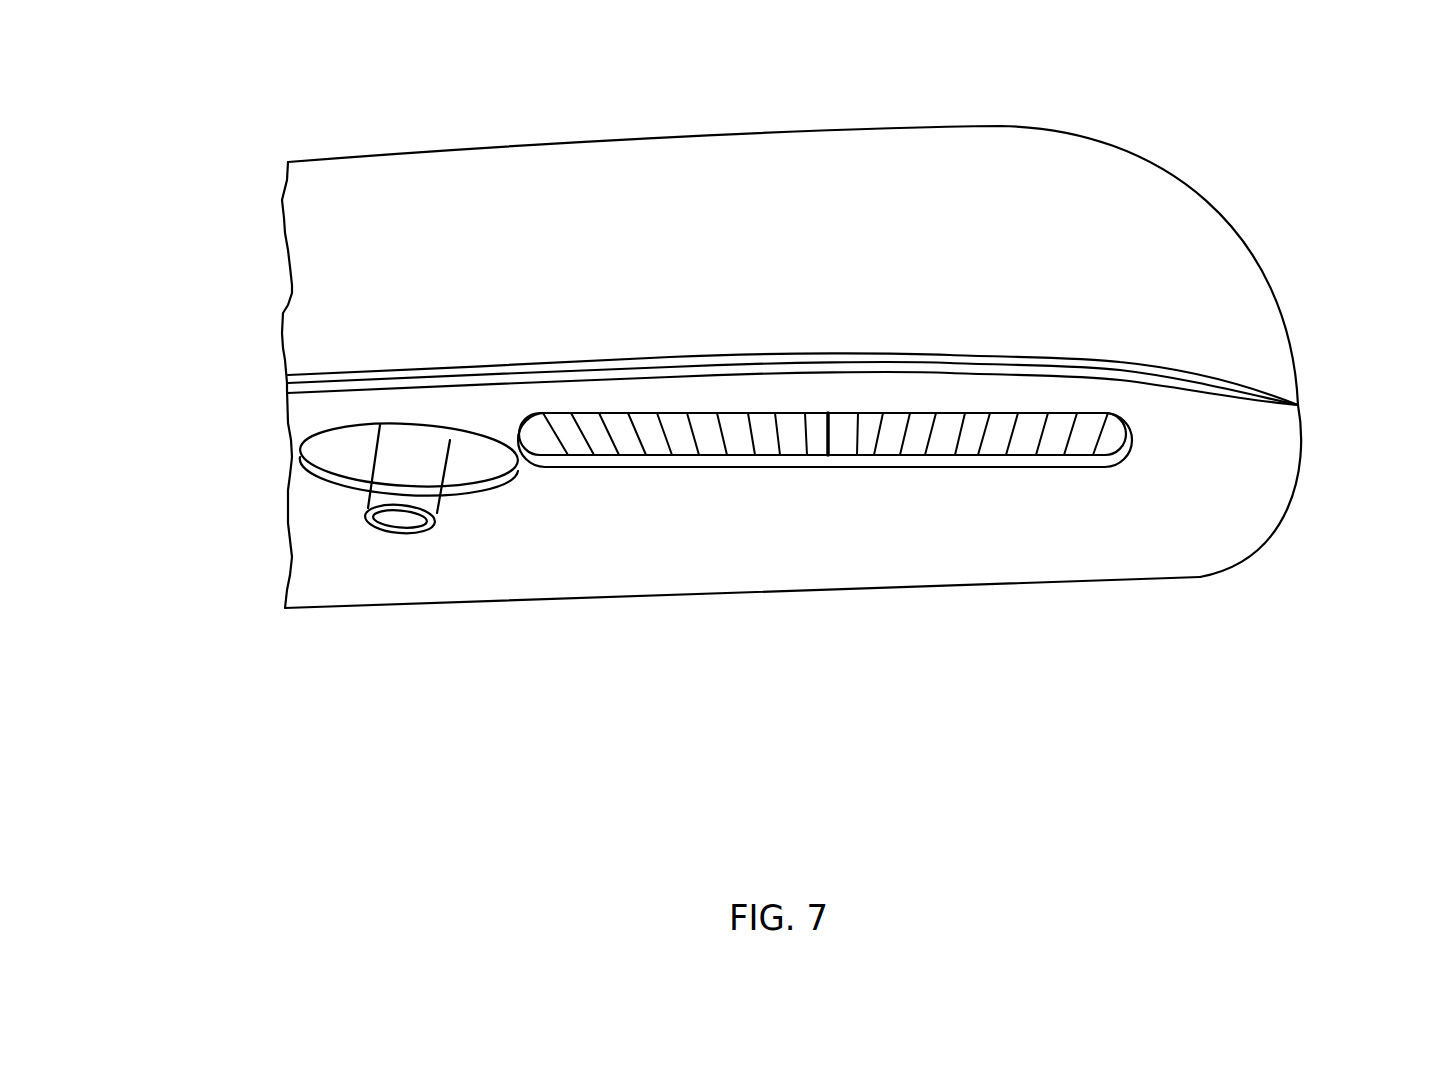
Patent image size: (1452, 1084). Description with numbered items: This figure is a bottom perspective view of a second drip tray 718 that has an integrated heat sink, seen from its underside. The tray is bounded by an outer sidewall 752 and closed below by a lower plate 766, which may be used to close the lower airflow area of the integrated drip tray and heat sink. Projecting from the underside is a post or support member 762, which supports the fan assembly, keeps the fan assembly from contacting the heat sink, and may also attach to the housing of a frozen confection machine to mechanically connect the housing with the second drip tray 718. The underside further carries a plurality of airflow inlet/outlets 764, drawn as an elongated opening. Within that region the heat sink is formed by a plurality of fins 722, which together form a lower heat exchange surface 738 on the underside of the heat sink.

The second drip tray 718 is at (292, 110).
The outer sidewall 752 is at (1018, 253).
The lower plate 766 is at (1215, 460).
The support member 762 is at (405, 463).
The airflow inlet/outlets 764 is at (625, 438).
The fins 722 is at (895, 437).
The lower heat exchange surface 738 is at (975, 435).